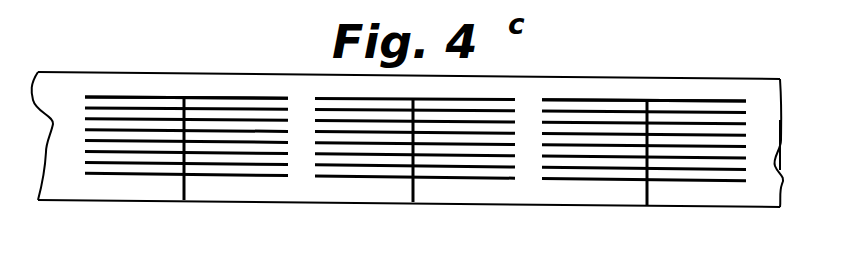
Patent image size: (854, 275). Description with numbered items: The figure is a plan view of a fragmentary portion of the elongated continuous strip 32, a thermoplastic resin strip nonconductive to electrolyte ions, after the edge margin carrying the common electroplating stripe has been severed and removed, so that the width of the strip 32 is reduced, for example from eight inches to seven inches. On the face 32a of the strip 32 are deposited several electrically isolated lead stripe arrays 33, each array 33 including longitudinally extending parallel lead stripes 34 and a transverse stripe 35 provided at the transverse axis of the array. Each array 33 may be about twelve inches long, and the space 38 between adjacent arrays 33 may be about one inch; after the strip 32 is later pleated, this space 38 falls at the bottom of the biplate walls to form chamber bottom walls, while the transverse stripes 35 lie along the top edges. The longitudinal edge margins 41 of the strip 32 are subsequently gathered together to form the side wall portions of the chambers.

The continuous strip 32 is at (781, 50).
The face of strip 32a is at (758, 167).
The lead stripe array 33 is at (163, 96).
The lead stripes 34 is at (100, 174).
The transverse stripe 35 is at (184, 200).
The space between adjacent arrays 38 is at (300, 117).
The longitudinal edge margins 41 is at (62, 88).